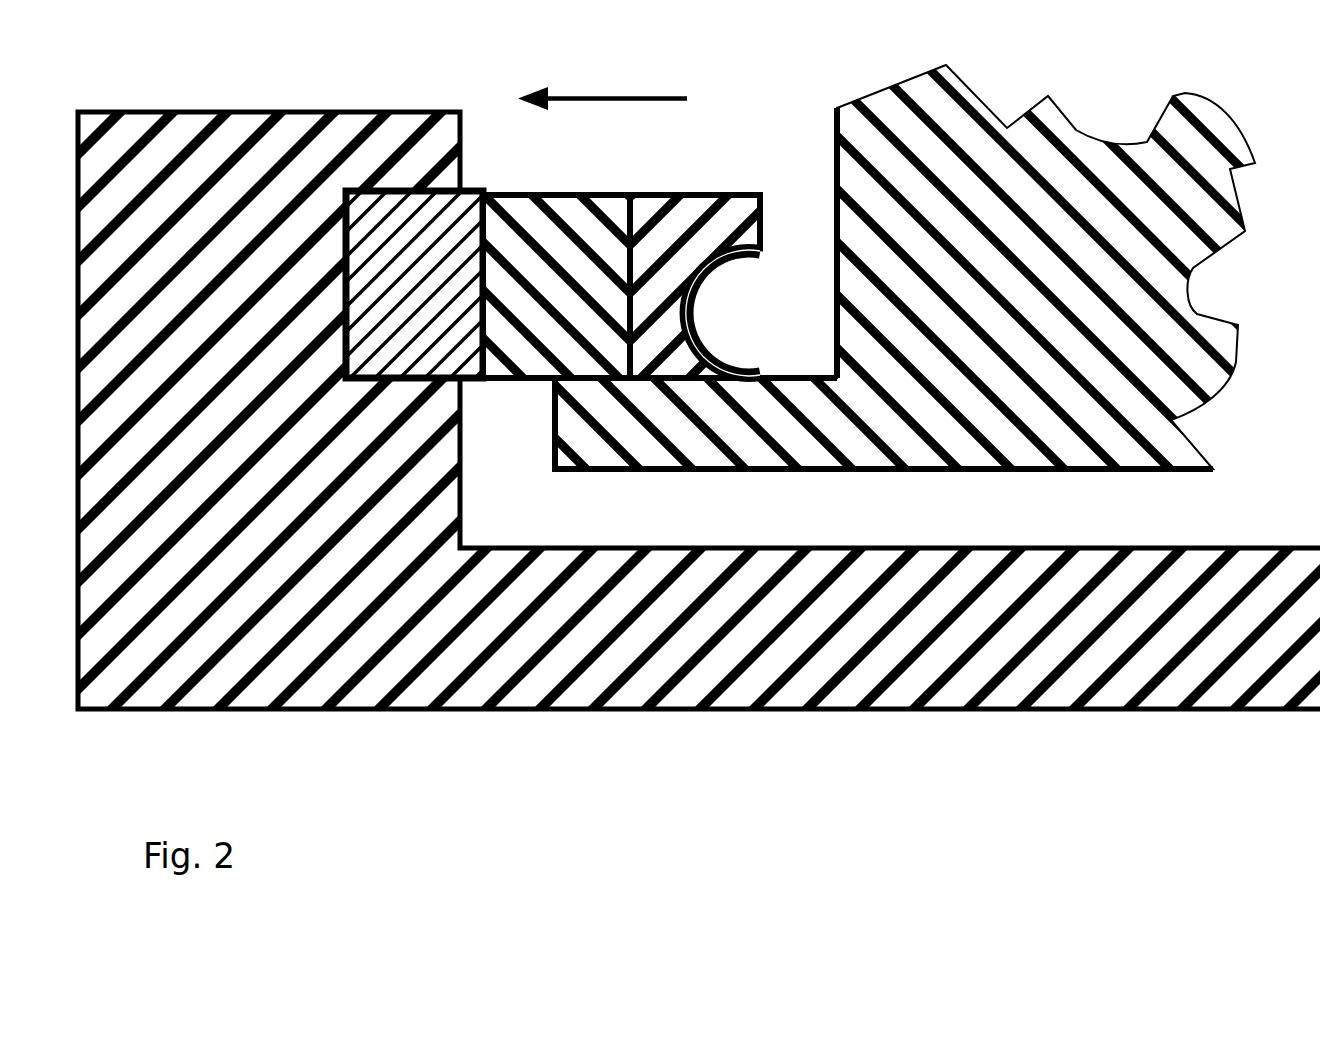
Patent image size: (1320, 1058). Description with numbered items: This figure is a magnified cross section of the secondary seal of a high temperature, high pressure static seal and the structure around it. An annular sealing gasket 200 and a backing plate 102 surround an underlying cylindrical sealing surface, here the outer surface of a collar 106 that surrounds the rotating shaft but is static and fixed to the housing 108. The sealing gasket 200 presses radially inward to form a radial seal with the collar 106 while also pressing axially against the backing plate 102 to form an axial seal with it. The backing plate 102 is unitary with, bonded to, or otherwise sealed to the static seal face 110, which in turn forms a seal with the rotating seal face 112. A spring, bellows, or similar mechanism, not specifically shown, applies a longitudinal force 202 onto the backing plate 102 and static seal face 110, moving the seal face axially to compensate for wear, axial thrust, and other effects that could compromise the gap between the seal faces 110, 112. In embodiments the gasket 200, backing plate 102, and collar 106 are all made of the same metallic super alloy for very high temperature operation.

The backing plate 102 is at (657, 236).
The collar 106 is at (650, 436).
The housing 108 is at (1148, 202).
The static seal face 110 is at (528, 286).
The rotating seal face 112 is at (388, 285).
The annular sealing gasket 200 is at (702, 315).
The longitudinal force 202 is at (600, 95).